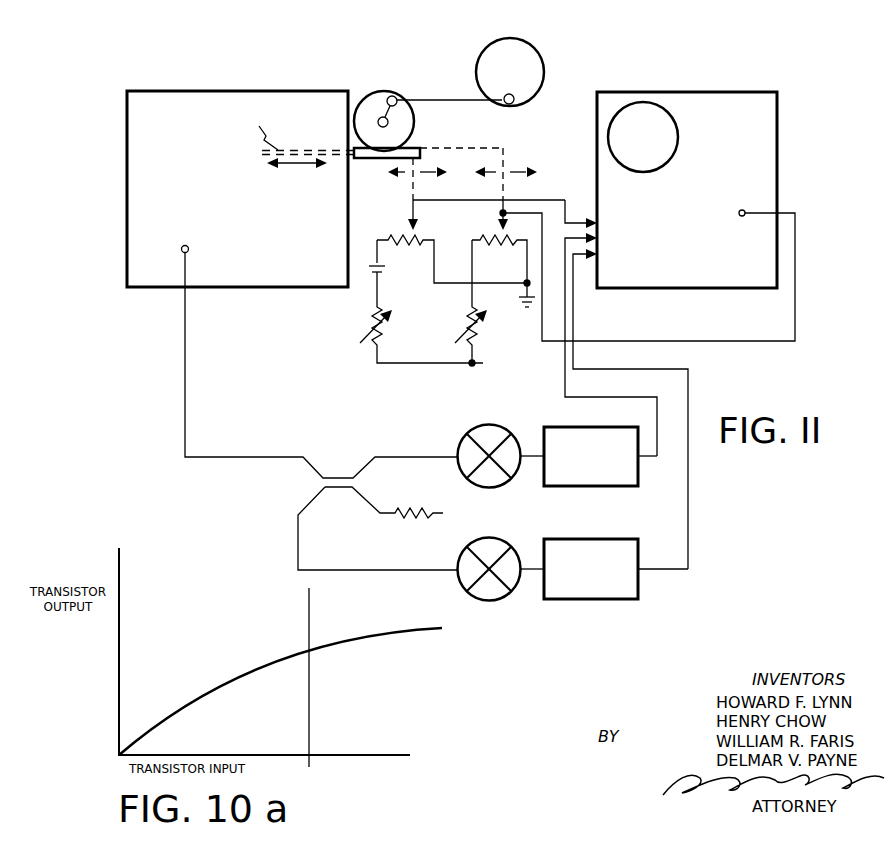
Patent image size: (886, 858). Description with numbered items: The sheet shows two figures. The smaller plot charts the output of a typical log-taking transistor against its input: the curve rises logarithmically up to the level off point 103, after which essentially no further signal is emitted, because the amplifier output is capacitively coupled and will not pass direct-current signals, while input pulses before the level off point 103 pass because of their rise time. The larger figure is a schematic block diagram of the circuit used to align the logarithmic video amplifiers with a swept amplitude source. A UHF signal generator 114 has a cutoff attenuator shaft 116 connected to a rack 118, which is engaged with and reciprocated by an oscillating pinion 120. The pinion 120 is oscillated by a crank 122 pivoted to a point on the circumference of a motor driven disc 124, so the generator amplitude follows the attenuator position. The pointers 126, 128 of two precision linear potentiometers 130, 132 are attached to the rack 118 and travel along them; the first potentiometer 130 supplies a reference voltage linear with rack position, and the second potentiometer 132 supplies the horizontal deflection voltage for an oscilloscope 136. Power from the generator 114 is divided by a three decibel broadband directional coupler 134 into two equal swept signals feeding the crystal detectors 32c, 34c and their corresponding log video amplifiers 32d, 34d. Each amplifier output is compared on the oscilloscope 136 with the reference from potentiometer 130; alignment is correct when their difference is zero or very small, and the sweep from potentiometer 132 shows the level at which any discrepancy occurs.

In FIG. 11, the signal generator 114 is at (237, 206).
In FIG. 11, the cutoff attenuator shaft 116 is at (286, 170).
In FIG. 11, the rack 118 is at (445, 174).
In FIG. 11, the oscillating pinion 120 is at (408, 121).
In FIG. 11, the crank 122 is at (449, 85).
In FIG. 11, the motor driven disc 124 is at (520, 83).
In FIG. 11, the pointer 126 is at (463, 215).
In FIG. 11, the pointer 128 is at (622, 270).
In FIG. 11, the first potentiometer 130 is at (443, 303).
In FIG. 11, the second potentiometer 132 is at (495, 299).
In FIG. 11, the directional coupler 134 is at (321, 411).
In FIG. 11, the oscilloscope 136 is at (691, 330).
In FIG. 11, the mixer 32c is at (501, 445).
In FIG. 11, the log video amplifier 32d is at (600, 475).
In FIG. 11, the crystal detector 34c is at (501, 559).
In FIG. 11, the log video amplifier 34d is at (616, 586).
In FIG. 10a, the level off point 103 is at (327, 701).